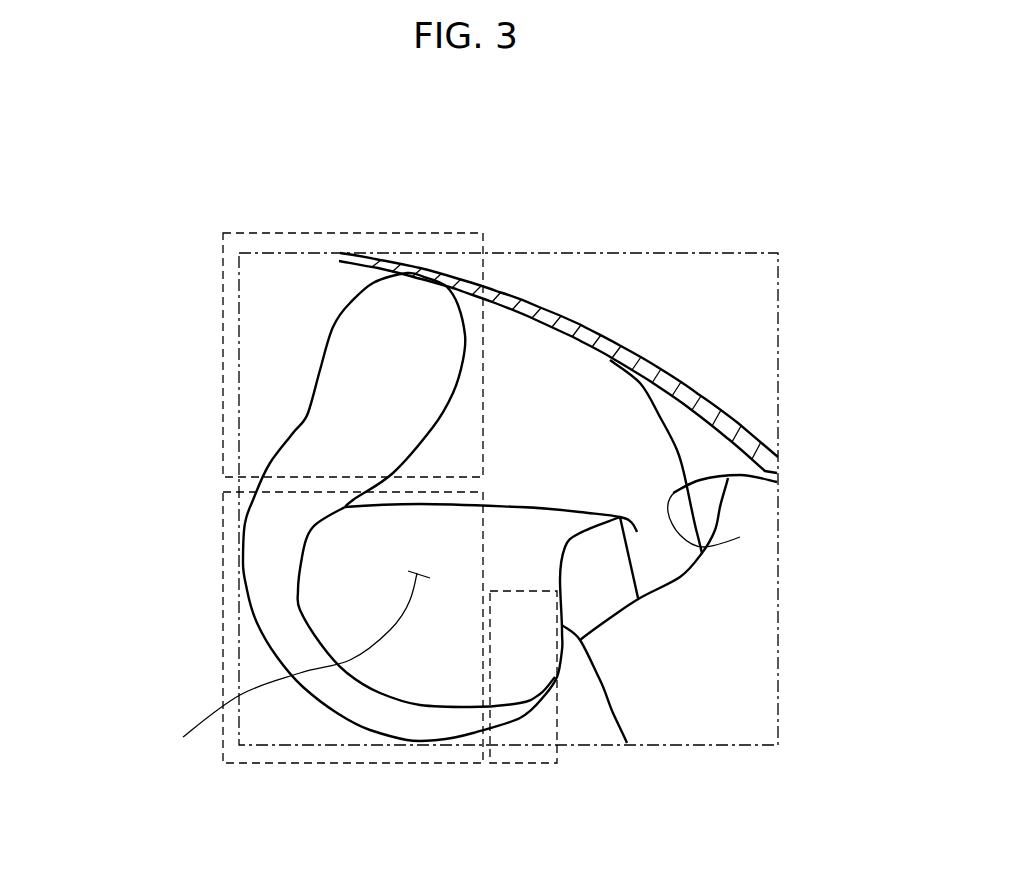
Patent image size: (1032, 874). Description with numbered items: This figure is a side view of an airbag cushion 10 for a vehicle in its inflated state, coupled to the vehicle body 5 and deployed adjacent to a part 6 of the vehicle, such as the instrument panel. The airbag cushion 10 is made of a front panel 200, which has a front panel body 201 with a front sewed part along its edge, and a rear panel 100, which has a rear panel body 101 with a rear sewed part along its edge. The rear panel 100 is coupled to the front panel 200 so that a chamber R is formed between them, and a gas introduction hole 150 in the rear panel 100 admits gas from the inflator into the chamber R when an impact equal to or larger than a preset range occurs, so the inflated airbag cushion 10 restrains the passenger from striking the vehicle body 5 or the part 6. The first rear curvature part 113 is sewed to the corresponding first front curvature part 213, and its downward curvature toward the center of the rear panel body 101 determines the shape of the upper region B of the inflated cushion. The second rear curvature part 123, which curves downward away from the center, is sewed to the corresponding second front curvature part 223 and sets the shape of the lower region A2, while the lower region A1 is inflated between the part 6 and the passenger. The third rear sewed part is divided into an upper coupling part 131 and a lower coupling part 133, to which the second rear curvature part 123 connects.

The airbag cushion 10 is at (184, 136).
The vehicle body 5 is at (682, 393).
The part of the vehicle 6 is at (610, 697).
The rear panel 100 is at (149, 665).
The rear panel body 101 is at (340, 620).
The first rear curvature part 113 is at (427, 340).
The second rear curvature part 123 is at (427, 669).
The upper coupling part 131 is at (550, 378).
The lower coupling part 133 is at (493, 505).
The gas introduction hole 150 is at (740, 537).
The front panel 200 is at (147, 500).
The front panel body 201 is at (276, 525).
The first front curvature part 213 is at (453, 393).
The second front curvature part 223 is at (373, 692).
The chamber R is at (297, 670).
The region B is at (349, 233).
The region A1 is at (517, 765).
The region A2 is at (278, 765).